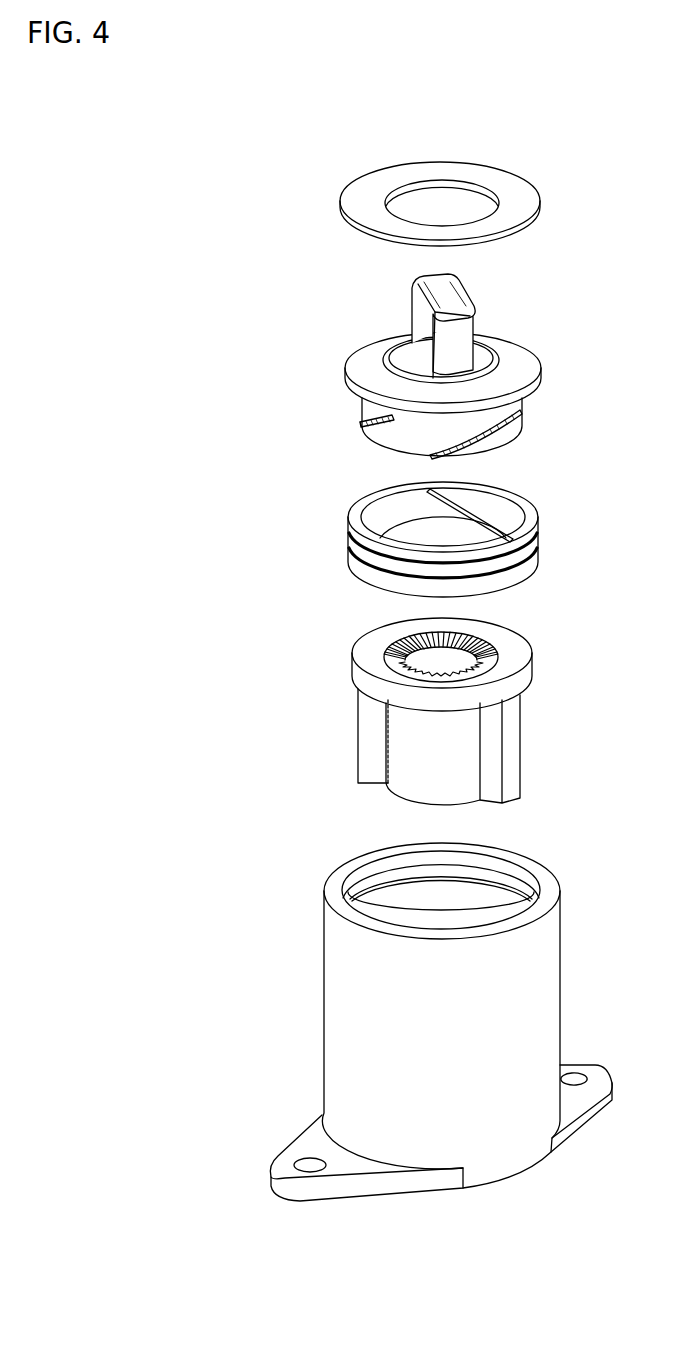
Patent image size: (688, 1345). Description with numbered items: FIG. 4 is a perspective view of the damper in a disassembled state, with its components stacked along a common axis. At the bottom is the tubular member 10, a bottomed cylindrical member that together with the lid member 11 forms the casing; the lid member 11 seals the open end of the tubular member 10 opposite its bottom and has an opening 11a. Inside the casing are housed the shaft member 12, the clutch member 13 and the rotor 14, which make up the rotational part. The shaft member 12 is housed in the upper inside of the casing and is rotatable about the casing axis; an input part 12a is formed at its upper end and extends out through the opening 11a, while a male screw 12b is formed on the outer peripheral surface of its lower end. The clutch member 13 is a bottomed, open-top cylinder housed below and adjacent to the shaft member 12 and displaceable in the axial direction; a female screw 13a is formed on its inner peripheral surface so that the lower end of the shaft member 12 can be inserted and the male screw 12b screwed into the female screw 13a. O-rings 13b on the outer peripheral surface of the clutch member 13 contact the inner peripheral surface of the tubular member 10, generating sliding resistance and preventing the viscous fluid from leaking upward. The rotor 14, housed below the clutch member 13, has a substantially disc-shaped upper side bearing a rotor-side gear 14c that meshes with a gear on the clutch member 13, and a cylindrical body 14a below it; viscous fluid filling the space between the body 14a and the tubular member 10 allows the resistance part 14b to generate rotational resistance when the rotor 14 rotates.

The tubular member 10 is at (540, 960).
The lid member 11 is at (463, 191).
The opening 11a is at (405, 184).
The shaft member 12 is at (417, 368).
The input part 12a is at (418, 323).
The male screw 12b is at (360, 423).
The clutch member 13 is at (419, 537).
The female screw 13a is at (478, 510).
The O-rings 13b is at (363, 568).
The rotor 14 is at (444, 704).
The cylindrical body 14a is at (412, 768).
The resistance part 14b is at (372, 735).
The rotor-side gear 14c is at (488, 645).